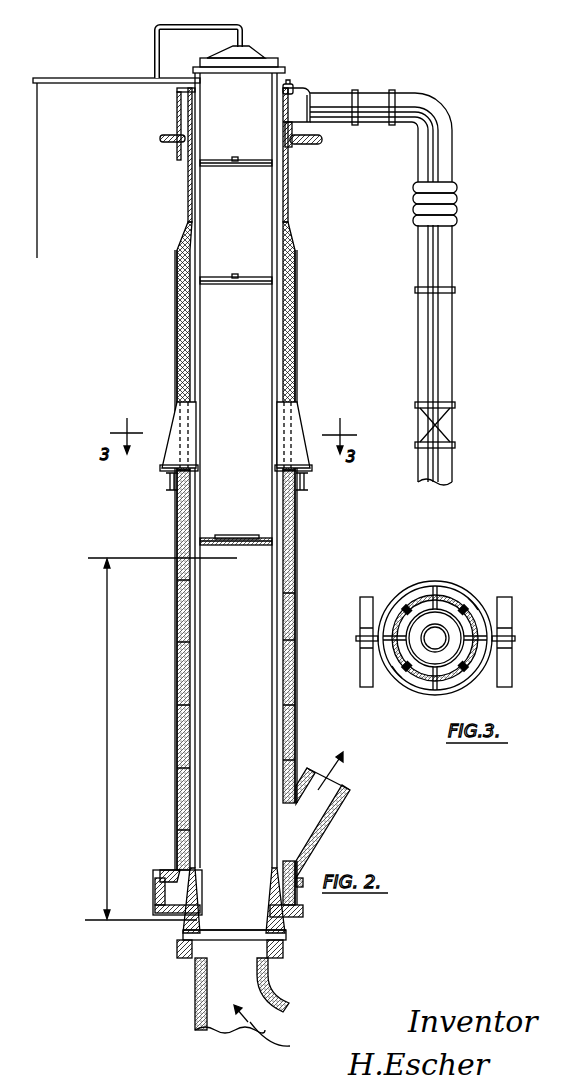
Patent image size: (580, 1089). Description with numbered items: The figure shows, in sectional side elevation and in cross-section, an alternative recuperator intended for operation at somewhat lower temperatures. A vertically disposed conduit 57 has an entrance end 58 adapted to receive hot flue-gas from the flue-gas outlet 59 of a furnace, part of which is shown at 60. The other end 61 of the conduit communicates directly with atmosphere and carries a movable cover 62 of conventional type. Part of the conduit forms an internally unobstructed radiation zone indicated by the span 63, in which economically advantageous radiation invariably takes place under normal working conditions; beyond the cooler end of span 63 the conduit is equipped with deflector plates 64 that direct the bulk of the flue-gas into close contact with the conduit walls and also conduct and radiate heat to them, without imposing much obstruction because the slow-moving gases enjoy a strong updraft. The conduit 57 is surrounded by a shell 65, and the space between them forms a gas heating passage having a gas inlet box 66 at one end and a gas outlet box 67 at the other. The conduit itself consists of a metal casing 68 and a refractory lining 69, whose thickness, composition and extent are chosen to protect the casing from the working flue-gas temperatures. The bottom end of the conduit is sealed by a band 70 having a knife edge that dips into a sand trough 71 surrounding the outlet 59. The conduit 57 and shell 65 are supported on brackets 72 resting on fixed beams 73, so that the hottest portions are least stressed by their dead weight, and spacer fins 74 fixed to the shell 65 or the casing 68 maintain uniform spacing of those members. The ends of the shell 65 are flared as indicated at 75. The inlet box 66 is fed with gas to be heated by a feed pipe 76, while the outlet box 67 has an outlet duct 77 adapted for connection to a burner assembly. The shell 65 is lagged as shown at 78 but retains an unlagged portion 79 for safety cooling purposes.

In FIG. 2, the conduit 57 is at (296, 323).
In FIG. 2, the entrance end 58 is at (224, 928).
In FIG. 2, the flue-gas outlet 59 is at (230, 942).
In FIG. 2, the furnace 60 is at (290, 1010).
In FIG. 2, the other end 61 is at (290, 84).
In FIG. 2, the movable cover 62 is at (253, 53).
In FIG. 2, the span 63 is at (161, 739).
In FIG. 2, the deflector plates 64 is at (258, 166).
In FIG. 3, the deflector plates 64 is at (452, 598).
In FIG. 2, the shell 65 is at (298, 372).
In FIG. 3, the shell 65 is at (410, 594).
In FIG. 2, the gas inlet box 66 is at (310, 98).
In FIG. 2, the gas outlet box 67 is at (180, 910).
In FIG. 2, the metal casing 68 is at (294, 234).
In FIG. 3, the metal casing 68 is at (438, 597).
In FIG. 2, the refractory lining 69 is at (198, 894).
In FIG. 2, the band 70 is at (282, 936).
In FIG. 2, the sand trough 71 is at (282, 952).
In FIG. 2, the brackets 72 is at (180, 424).
In FIG. 3, the brackets 72 is at (358, 642).
In FIG. 2, the fixed beams 73 is at (172, 486).
In FIG. 3, the fixed beams 73 is at (368, 598).
In FIG. 2, the spacer fins 74 is at (181, 606).
In FIG. 3, the spacer fins 74 is at (488, 596).
In FIG. 2, the flared ends 75 is at (342, 94).
In FIG. 2, the feed pipe 76 is at (454, 198).
In FIG. 2, the outlet duct 77 is at (344, 822).
In FIG. 2, the lagging 78 is at (180, 323).
In FIG. 2, the unlagged portion 79 is at (188, 160).